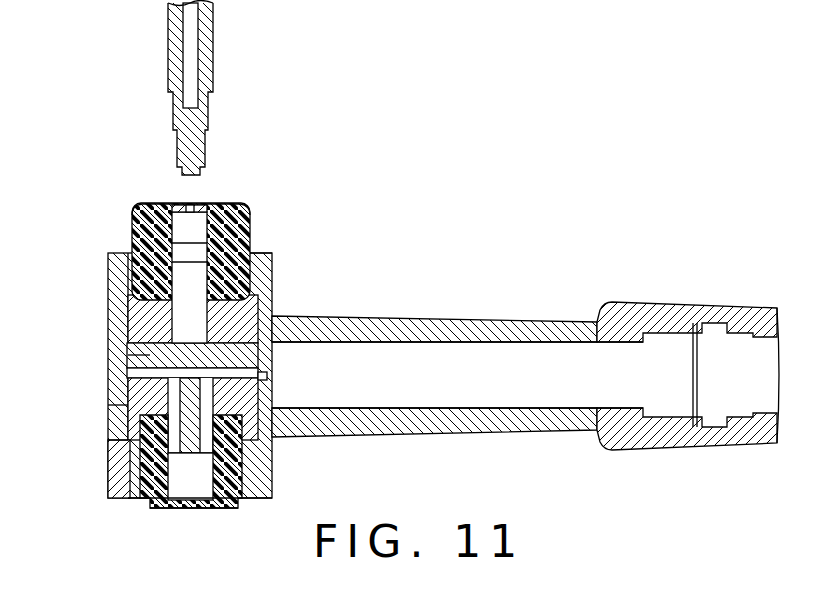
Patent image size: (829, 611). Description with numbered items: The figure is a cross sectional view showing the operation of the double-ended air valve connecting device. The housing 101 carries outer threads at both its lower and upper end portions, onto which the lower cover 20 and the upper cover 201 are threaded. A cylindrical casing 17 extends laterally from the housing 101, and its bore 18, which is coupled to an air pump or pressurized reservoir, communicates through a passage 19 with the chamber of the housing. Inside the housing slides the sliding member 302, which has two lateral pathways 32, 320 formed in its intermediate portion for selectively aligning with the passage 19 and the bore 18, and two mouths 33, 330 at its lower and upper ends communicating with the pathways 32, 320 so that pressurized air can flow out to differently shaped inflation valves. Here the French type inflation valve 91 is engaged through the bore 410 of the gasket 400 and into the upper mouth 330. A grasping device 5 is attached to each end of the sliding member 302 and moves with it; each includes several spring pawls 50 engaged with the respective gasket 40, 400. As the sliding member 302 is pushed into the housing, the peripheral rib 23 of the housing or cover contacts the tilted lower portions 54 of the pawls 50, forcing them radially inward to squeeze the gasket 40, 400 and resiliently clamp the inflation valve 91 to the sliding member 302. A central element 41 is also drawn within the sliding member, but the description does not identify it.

The grasping device 5 is at (238, 518).
The cylindrical casing 17 is at (505, 330).
The bore 18 is at (528, 408).
The passage 19 is at (267, 376).
The cover 20 is at (275, 490).
The peripheral rib 23 is at (118, 250).
The pathway 32 is at (140, 373).
The mouth 33 is at (113, 420).
The gasket 40 is at (115, 470).
The pin 41 is at (205, 470).
The pawls 50 is at (163, 508).
The tilted lower portion 54 is at (132, 222).
The inflation valve 91 is at (213, 42).
The housing 101 is at (113, 412).
The cover 201 is at (273, 262).
The sliding member 302 is at (140, 354).
The pathway 320 is at (150, 342).
The mouth 330 is at (110, 313).
The gasket 400 is at (250, 228).
The bore 410 is at (192, 210).